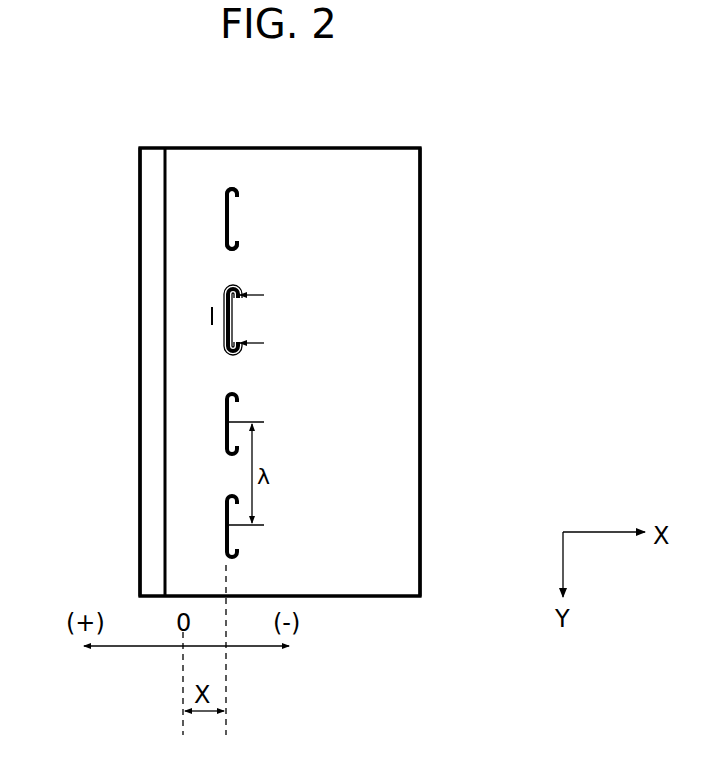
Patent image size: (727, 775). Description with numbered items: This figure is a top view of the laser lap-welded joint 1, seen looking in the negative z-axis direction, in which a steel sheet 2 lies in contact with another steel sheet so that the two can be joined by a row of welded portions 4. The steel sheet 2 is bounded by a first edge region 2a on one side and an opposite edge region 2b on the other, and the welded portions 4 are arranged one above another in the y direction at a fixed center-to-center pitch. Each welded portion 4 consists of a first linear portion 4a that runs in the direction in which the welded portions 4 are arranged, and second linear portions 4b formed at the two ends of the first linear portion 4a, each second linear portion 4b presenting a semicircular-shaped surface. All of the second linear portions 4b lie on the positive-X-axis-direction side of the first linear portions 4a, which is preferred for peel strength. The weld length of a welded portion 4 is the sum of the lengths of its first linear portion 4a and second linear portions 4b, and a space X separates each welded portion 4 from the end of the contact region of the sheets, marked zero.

The laser lap-welded joint 1 is at (84, 174).
The steel sheet 2 is at (98, 395).
The first end portion of substrate 2a is at (153, 147).
The second end portion of substrate 2b is at (421, 215).
The welded portion 4 is at (363, 58).
The first linear portion 4a is at (230, 218).
The second linear portion 4b is at (237, 190).